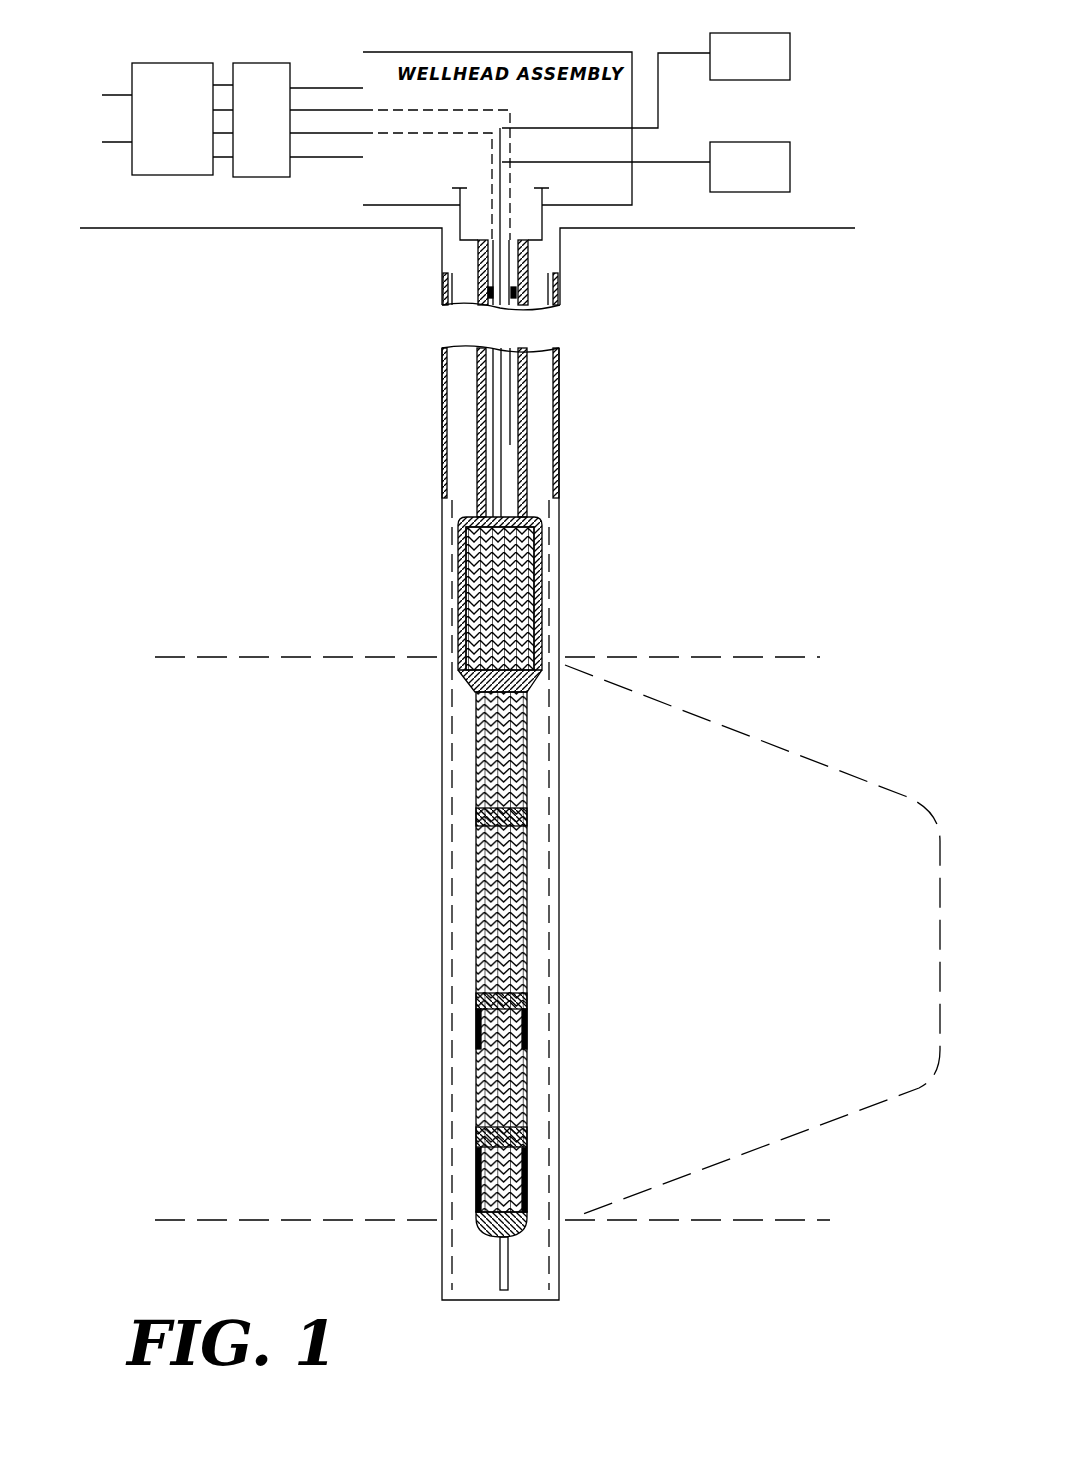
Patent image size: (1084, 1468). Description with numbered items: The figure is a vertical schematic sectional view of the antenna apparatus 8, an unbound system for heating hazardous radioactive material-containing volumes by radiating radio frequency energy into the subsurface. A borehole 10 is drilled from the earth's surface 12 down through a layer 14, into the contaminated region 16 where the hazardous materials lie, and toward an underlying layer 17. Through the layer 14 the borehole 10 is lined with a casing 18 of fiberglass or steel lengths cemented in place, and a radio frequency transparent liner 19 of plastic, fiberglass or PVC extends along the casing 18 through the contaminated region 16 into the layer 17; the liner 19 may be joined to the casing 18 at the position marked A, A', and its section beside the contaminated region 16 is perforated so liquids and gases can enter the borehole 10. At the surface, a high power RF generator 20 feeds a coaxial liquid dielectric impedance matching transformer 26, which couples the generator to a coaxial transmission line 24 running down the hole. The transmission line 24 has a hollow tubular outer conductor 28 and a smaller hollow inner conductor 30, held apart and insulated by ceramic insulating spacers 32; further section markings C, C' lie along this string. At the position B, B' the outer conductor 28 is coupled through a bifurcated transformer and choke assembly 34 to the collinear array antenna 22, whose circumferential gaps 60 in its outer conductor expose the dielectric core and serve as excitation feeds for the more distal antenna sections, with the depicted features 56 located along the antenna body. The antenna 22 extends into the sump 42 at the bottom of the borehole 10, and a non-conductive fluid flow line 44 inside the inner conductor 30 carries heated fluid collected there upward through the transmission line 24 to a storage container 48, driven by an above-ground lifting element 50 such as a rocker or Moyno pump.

The antenna apparatus 8 is at (396, 445).
The borehole 10 is at (561, 646).
The earth's surface 12 is at (125, 225).
The layer 14 is at (230, 418).
The contaminated region 16 is at (210, 892).
The layer 17 is at (224, 1280).
The casing 18 is at (440, 396).
The radio frequency transparent liner 19 is at (456, 584).
The high power RF generator 20 is at (184, 129).
The radio frequency antenna 22 is at (476, 909).
The coaxial transmission line 24 is at (328, 85).
The coaxial liquid dielectric impedance matching transformer 26 is at (274, 129).
The outer conductor 28 is at (475, 362).
The inner conductor 30 is at (497, 424).
The insulating spacers 32 is at (441, 292).
The bifurcated transformer and choke assembly 34 is at (456, 671).
The sump 42 is at (531, 1272).
The fluid flow line 44 is at (506, 423).
The storage container 48 is at (762, 68).
The above-ground lifting element 50 is at (762, 179).
The electrodes 56 is at (478, 1047).
The circumferential gaps 60 is at (476, 818).
The position A—A' A is at (404, 496).
The position B—B' B is at (405, 516).
The section line C is at (405, 462).
The position A— A' is at (597, 496).
The position B— B' is at (597, 516).
The section line C' is at (598, 462).